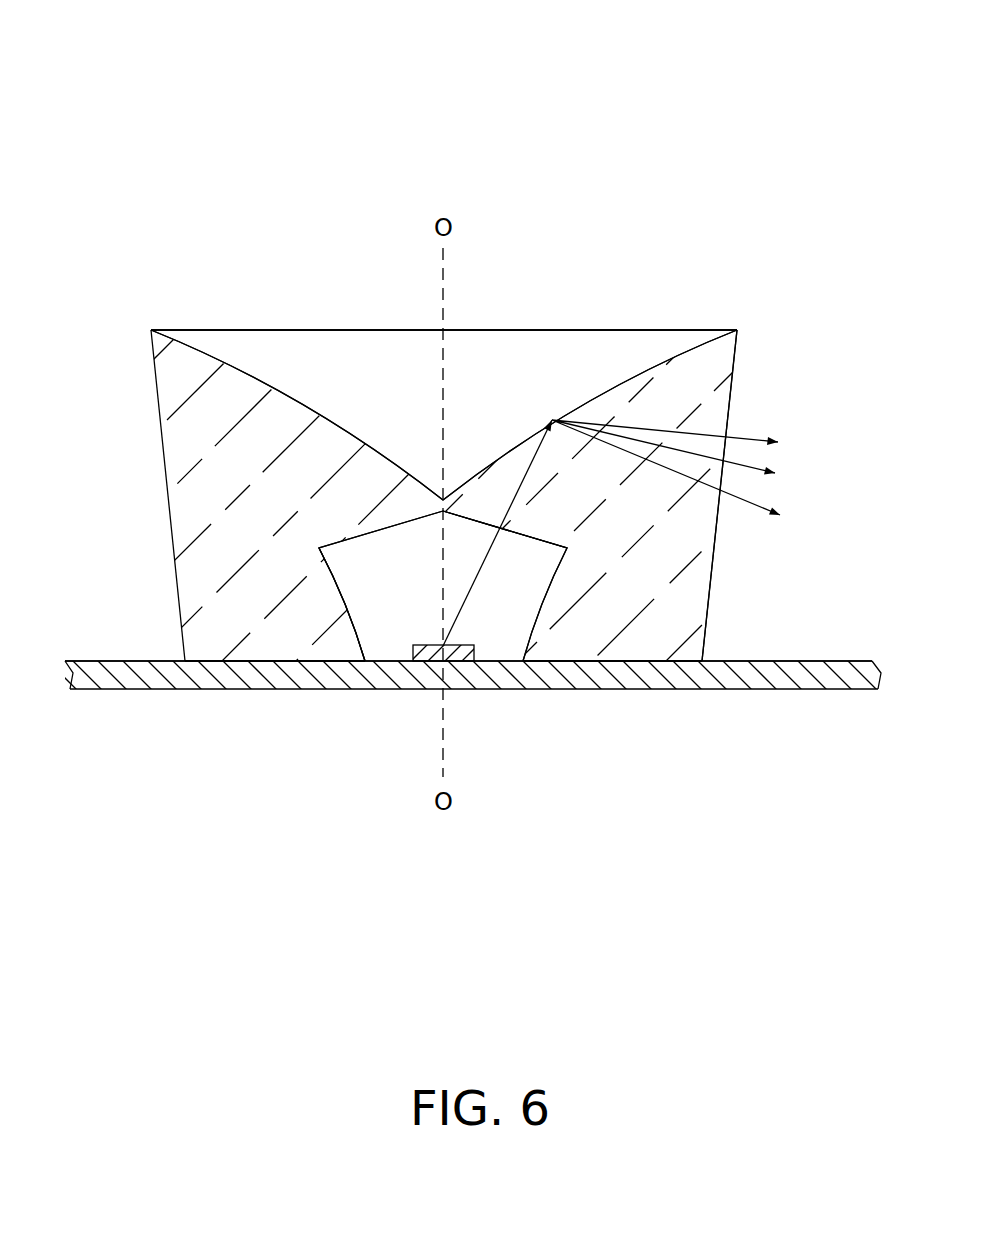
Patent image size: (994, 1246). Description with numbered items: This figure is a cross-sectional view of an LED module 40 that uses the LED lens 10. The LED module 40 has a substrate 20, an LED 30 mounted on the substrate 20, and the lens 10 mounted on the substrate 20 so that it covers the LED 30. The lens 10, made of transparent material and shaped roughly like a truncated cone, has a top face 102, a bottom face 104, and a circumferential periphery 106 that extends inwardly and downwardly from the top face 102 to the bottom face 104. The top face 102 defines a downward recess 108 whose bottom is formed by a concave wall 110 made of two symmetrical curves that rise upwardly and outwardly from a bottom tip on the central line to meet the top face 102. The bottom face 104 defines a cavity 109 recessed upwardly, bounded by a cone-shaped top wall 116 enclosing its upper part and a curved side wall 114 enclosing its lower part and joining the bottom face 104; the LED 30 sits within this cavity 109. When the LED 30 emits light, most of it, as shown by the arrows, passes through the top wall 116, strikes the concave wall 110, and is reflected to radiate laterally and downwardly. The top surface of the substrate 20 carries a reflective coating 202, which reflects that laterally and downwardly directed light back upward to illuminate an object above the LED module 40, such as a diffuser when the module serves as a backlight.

The LED module 40 is at (448, 45).
The lens 10 is at (142, 503).
The top face 102 is at (345, 330).
The concave wall 110 is at (270, 377).
The recess 108 is at (518, 364).
The circumferential periphery 106 is at (715, 562).
The bottom face 104 is at (585, 671).
The cavity 109 is at (472, 613).
The curved side wall 114 is at (355, 620).
The cone-shaped top wall 116 is at (510, 542).
The LED 30 is at (423, 652).
The substrate 20 is at (773, 683).
The reflective coating 202 is at (800, 657).